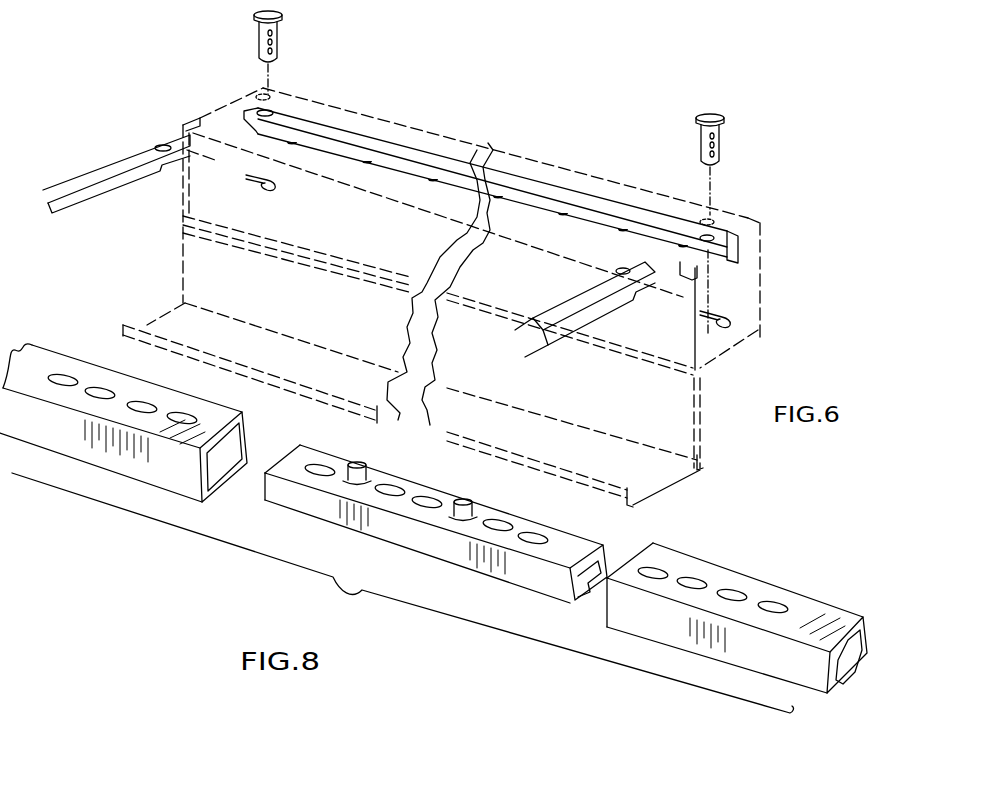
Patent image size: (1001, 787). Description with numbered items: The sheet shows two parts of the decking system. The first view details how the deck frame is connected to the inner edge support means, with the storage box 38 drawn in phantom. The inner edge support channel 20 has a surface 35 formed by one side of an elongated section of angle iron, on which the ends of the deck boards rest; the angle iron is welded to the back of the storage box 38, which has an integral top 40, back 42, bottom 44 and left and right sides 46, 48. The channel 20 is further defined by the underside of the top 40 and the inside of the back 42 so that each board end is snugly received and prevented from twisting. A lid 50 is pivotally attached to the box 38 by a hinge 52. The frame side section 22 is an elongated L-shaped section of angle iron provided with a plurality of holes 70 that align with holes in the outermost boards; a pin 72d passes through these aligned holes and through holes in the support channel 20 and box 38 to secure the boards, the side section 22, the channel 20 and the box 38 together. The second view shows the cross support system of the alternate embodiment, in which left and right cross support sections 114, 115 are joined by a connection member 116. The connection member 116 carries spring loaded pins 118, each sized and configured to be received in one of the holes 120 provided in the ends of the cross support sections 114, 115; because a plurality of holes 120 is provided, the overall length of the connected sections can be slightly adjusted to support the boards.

In FIG. 6, the channel 20 is at (597, 187).
In FIG. 6, the side section 22 is at (118, 165).
In FIG. 6, the surface 35 is at (491, 194).
In FIG. 6, the storage box 38 is at (740, 347).
In FIG. 6, the top 40 is at (750, 220).
In FIG. 6, the back 42 is at (762, 308).
In FIG. 6, the bottom 44 is at (192, 243).
In FIG. 6, the left side 46 is at (180, 203).
In FIG. 6, the right side 48 is at (742, 283).
In FIG. 6, the lid 50 is at (645, 494).
In FIG. 6, the hinge 52 is at (707, 377).
In FIG. 6, the holes 70 is at (612, 265).
In FIG. 6, the pin 72d is at (276, 40).
In FIG. 8, the left cross support section 114 is at (167, 483).
In FIG. 8, the right cross support section 115 is at (637, 630).
In FIG. 8, the connection member 116 is at (445, 550).
In FIG. 8, the spring loaded pins 118 is at (455, 500).
In FIG. 8, the holes 120 is at (183, 417).